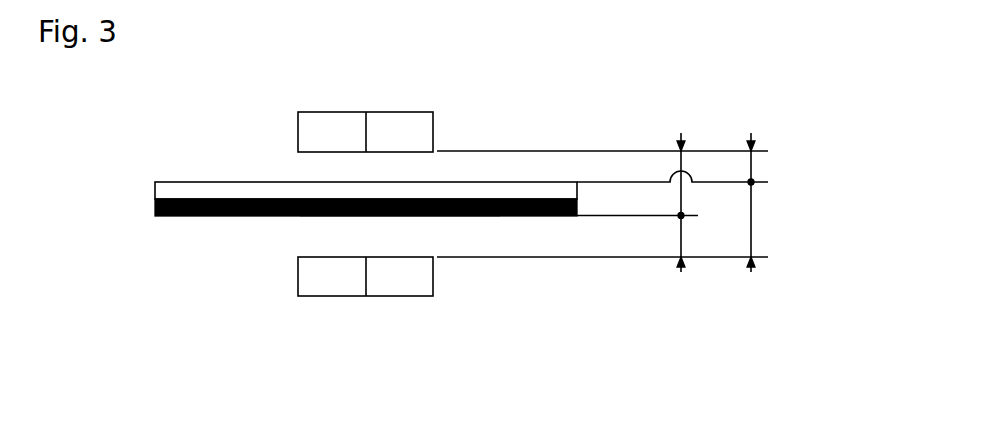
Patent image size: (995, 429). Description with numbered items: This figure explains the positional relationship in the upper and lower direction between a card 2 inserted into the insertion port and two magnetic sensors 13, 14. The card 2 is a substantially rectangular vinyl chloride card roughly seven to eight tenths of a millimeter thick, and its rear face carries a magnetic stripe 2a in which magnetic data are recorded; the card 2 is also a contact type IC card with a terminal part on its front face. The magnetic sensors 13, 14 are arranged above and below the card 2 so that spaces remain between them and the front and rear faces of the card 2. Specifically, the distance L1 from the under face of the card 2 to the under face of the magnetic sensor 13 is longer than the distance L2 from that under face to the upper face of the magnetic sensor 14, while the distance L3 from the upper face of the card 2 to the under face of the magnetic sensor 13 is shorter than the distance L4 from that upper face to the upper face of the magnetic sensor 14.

The card 2 is at (192, 182).
The magnetic stripe 2a is at (327, 216).
The magnetic sensor 13 is at (298, 129).
The magnetic sensor 14 is at (298, 277).
The distance L1 is at (681, 159).
The distance L2 is at (681, 237).
The distance L3 is at (751, 167).
The distance L4 is at (751, 225).